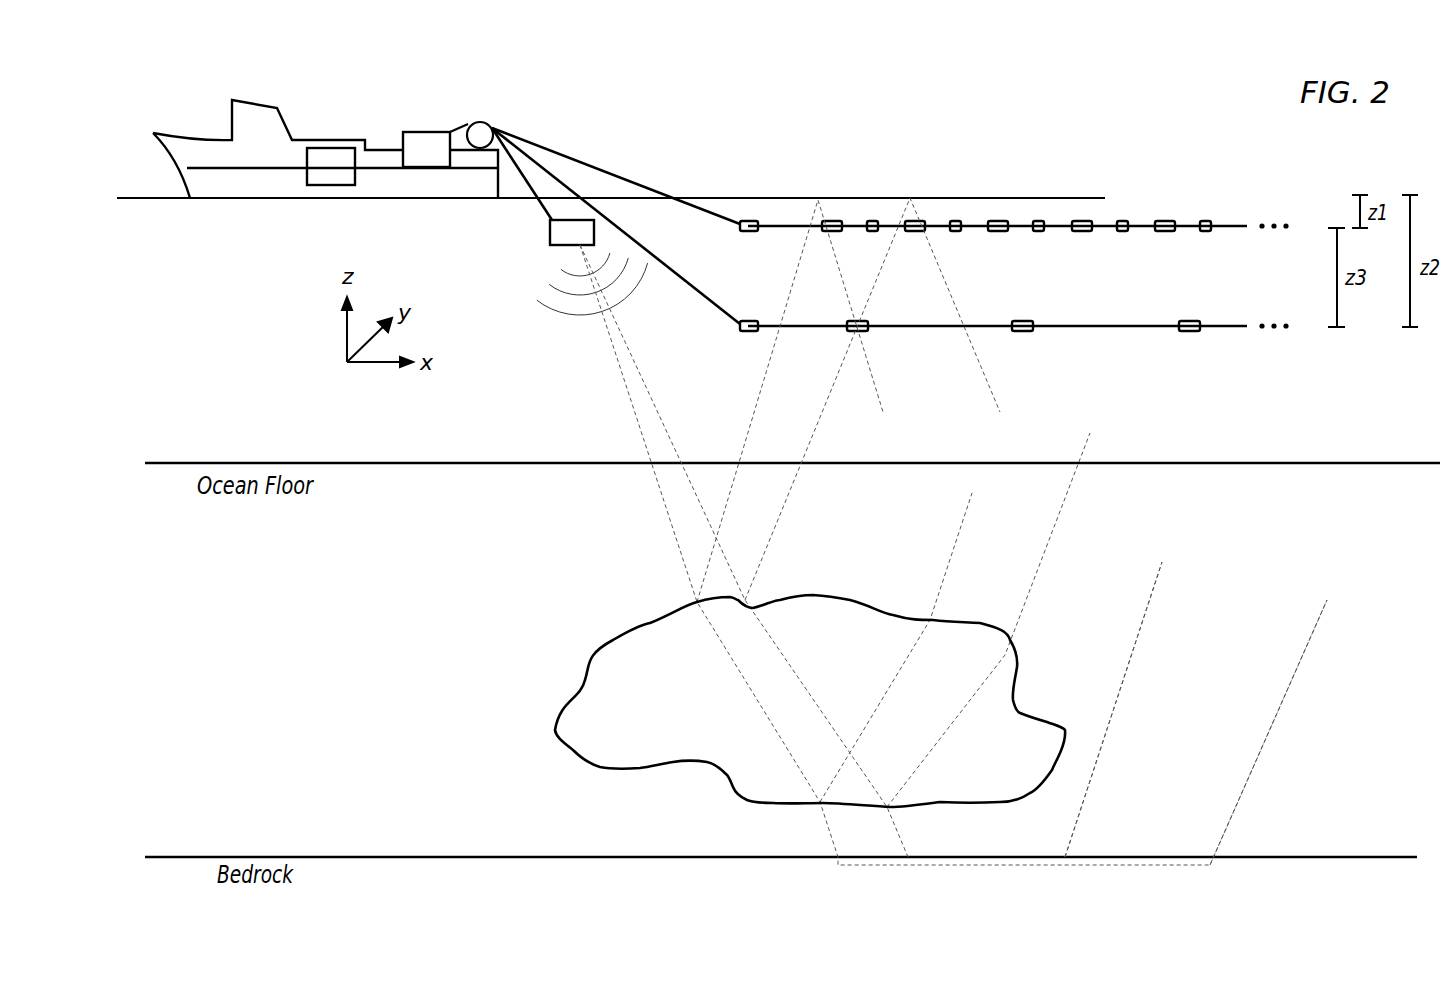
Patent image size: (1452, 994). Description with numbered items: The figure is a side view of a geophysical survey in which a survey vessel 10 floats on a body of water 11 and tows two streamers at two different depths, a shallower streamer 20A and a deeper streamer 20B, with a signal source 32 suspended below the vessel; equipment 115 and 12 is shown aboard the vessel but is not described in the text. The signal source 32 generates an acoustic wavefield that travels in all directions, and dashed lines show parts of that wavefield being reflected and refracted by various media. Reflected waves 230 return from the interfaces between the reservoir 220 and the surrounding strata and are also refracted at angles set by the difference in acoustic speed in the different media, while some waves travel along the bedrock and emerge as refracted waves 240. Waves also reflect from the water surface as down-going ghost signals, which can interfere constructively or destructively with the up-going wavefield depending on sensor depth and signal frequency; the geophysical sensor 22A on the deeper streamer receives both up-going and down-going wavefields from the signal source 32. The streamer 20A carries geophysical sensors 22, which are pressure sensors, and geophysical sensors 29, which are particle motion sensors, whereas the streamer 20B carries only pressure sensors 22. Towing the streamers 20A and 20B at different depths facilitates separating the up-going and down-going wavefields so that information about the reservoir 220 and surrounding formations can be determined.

The survey vessel 10 is at (232, 100).
The source deployment device 115 is at (422, 132).
The recording system 12 is at (338, 185).
The signal source 32 is at (550, 228).
The body of water 11 is at (611, 269).
The geophysical sensors 22 is at (833, 221).
The geophysical sensors 29 is at (872, 221).
The streamer 20A is at (1242, 225).
The streamer 20B is at (1243, 322).
The geophysical sensor 22A is at (857, 331).
The reservoir 220 is at (732, 741).
The reflected waves 230 is at (738, 472).
The refracted waves 240 is at (1282, 705).